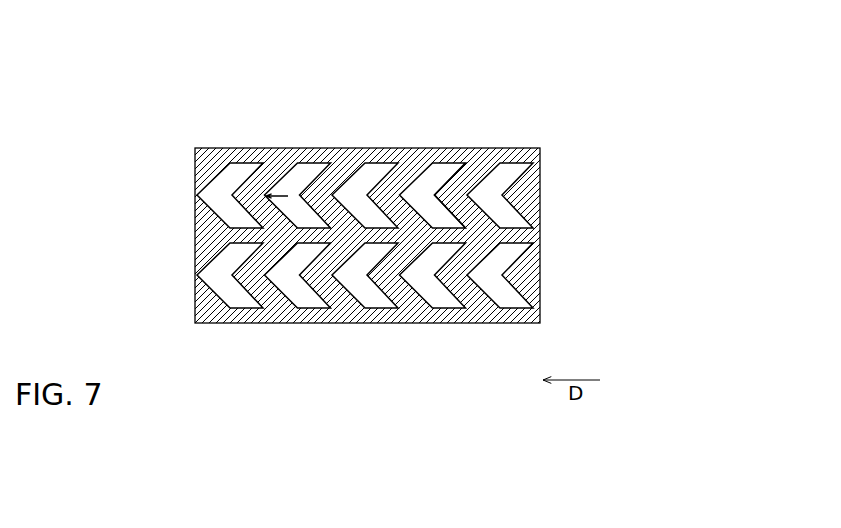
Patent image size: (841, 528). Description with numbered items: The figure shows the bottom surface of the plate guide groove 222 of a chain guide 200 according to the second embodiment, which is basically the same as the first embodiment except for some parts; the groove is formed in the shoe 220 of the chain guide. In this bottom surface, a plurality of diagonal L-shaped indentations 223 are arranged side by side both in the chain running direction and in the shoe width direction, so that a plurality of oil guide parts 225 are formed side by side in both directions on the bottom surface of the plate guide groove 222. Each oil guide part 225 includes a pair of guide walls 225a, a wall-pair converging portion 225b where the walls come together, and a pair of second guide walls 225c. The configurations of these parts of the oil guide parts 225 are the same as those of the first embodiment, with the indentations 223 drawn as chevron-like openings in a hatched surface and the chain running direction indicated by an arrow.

The chain guide 200 is at (643, 143).
The guide shoe 220 is at (145, 95).
The plate guide groove 222 is at (366, 235).
The diagonal L-shaped indentation 223 is at (490, 197).
The oil guide part 225 is at (518, 142).
The guide wall 225a is at (410, 185).
The wall-pair converging portion 225b is at (398, 190).
The second guide wall 225c is at (452, 177).